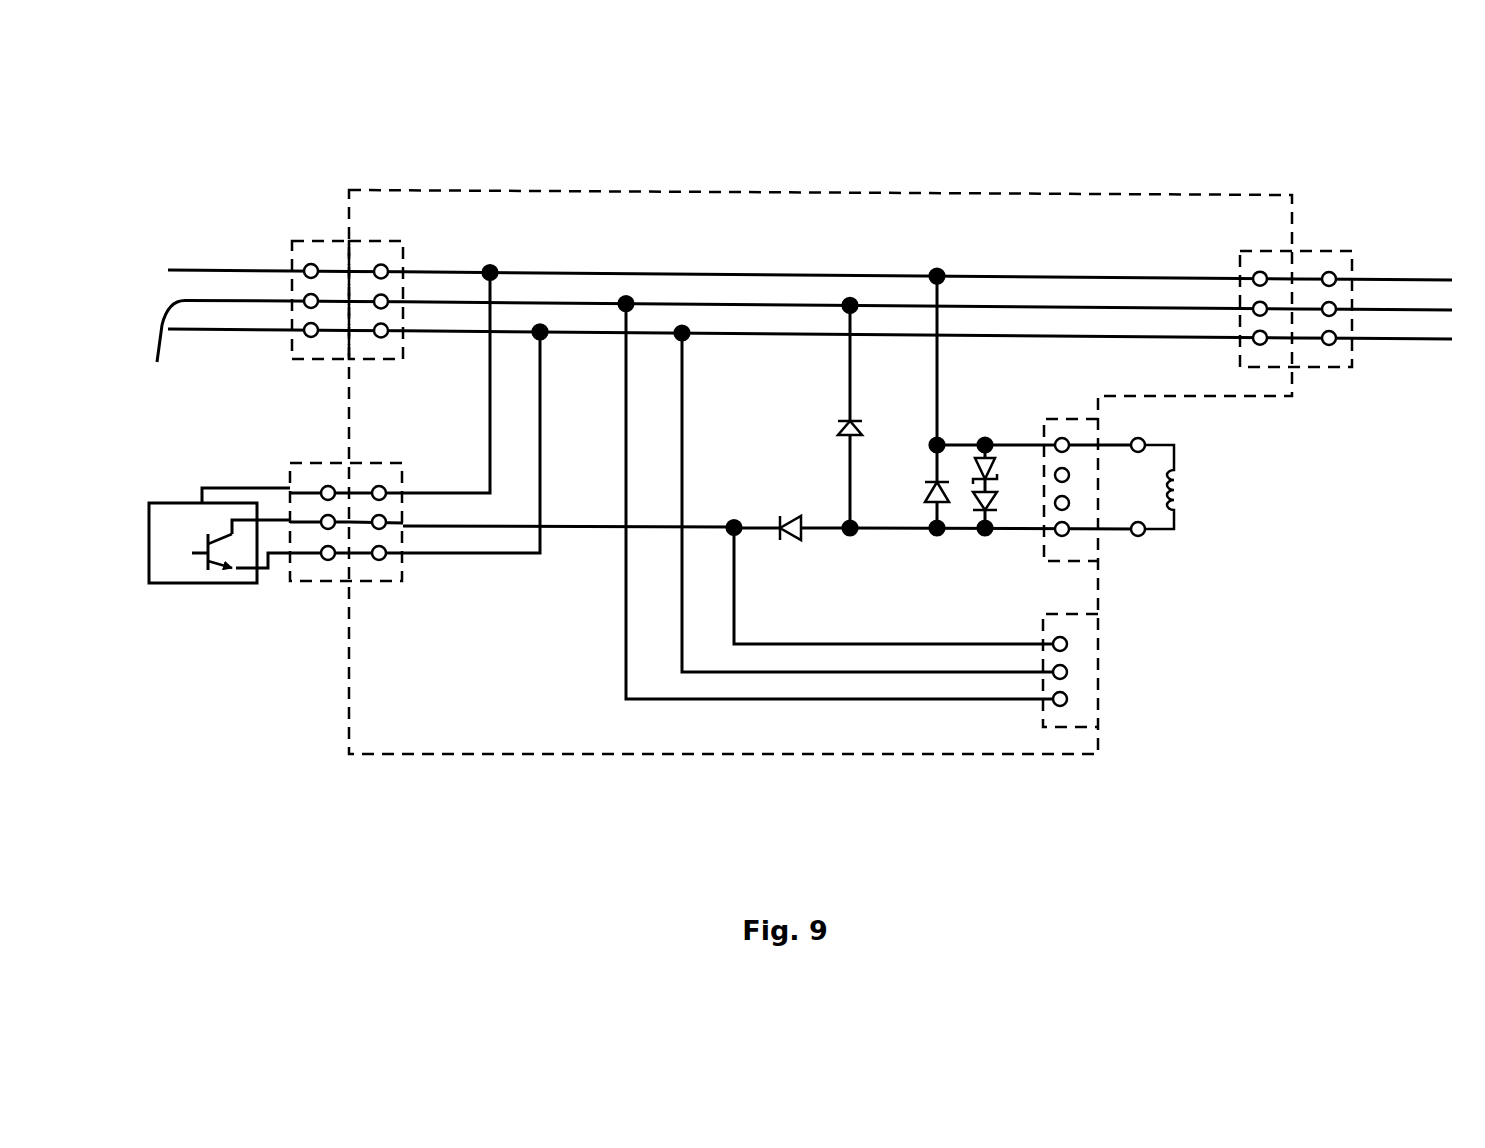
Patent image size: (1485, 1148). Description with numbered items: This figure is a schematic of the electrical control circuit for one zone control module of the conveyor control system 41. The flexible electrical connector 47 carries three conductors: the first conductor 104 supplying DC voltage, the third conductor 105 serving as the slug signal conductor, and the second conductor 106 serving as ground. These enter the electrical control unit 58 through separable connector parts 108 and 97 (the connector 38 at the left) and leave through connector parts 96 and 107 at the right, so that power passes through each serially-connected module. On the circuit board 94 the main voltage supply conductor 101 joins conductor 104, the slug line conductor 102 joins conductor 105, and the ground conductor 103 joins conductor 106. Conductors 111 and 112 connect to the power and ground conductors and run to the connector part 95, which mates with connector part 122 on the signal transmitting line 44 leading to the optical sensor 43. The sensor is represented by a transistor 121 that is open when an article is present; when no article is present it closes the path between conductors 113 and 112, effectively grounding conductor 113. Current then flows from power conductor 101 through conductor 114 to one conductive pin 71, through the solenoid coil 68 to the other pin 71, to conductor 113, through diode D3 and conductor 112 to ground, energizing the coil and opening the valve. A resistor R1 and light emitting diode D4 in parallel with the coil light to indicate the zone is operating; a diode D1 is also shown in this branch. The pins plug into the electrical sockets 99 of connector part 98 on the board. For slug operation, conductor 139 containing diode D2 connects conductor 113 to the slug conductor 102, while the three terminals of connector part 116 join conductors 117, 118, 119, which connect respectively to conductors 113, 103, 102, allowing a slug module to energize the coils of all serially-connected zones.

The flexible electrical connector 47 is at (183, 260).
The control system 41 is at (1434, 274).
The first conductor 104 is at (215, 268).
The third conductor 105 is at (1440, 386).
The second conductor 106 is at (207, 331).
The connector part 108 is at (316, 240).
The connector plug 97 is at (403, 242).
The connector 38 is at (382, 241).
The electrical control unit 58 is at (957, 186).
The circuit board 94 is at (821, 234).
The main voltage supply conductor 101 is at (1012, 275).
The slug line conductor 102 is at (1090, 305).
The ground conductor 103 is at (1162, 337).
The connector plug 96 is at (1252, 250).
The connector part 107 is at (1314, 251).
The conductor 111 is at (488, 412).
The conductor 112 is at (543, 425).
The conductor 113 is at (573, 523).
The connector part 122 is at (314, 462).
The connector part 95 is at (378, 462).
The optical sensor 43 is at (215, 537).
The signal transmitting line 44 is at (235, 484).
The transistor 121 is at (212, 560).
The conductor 139 is at (847, 356).
The diode D2 is at (838, 425).
The diode D3 is at (795, 514).
The conductor 114 is at (938, 371).
The diode D1 is at (927, 498).
The resistor R1 is at (978, 468).
The light emitting diode D4 is at (998, 497).
The connector part 98 is at (1056, 563).
The electrical sockets 99 is at (1062, 438).
The conductive pins 71 is at (1146, 443).
The solenoid coil 68 is at (1182, 470).
The connector part 116 is at (1058, 730).
The conductor 117 is at (860, 642).
The conductor 118 is at (778, 668).
The conductor 119 is at (874, 702).